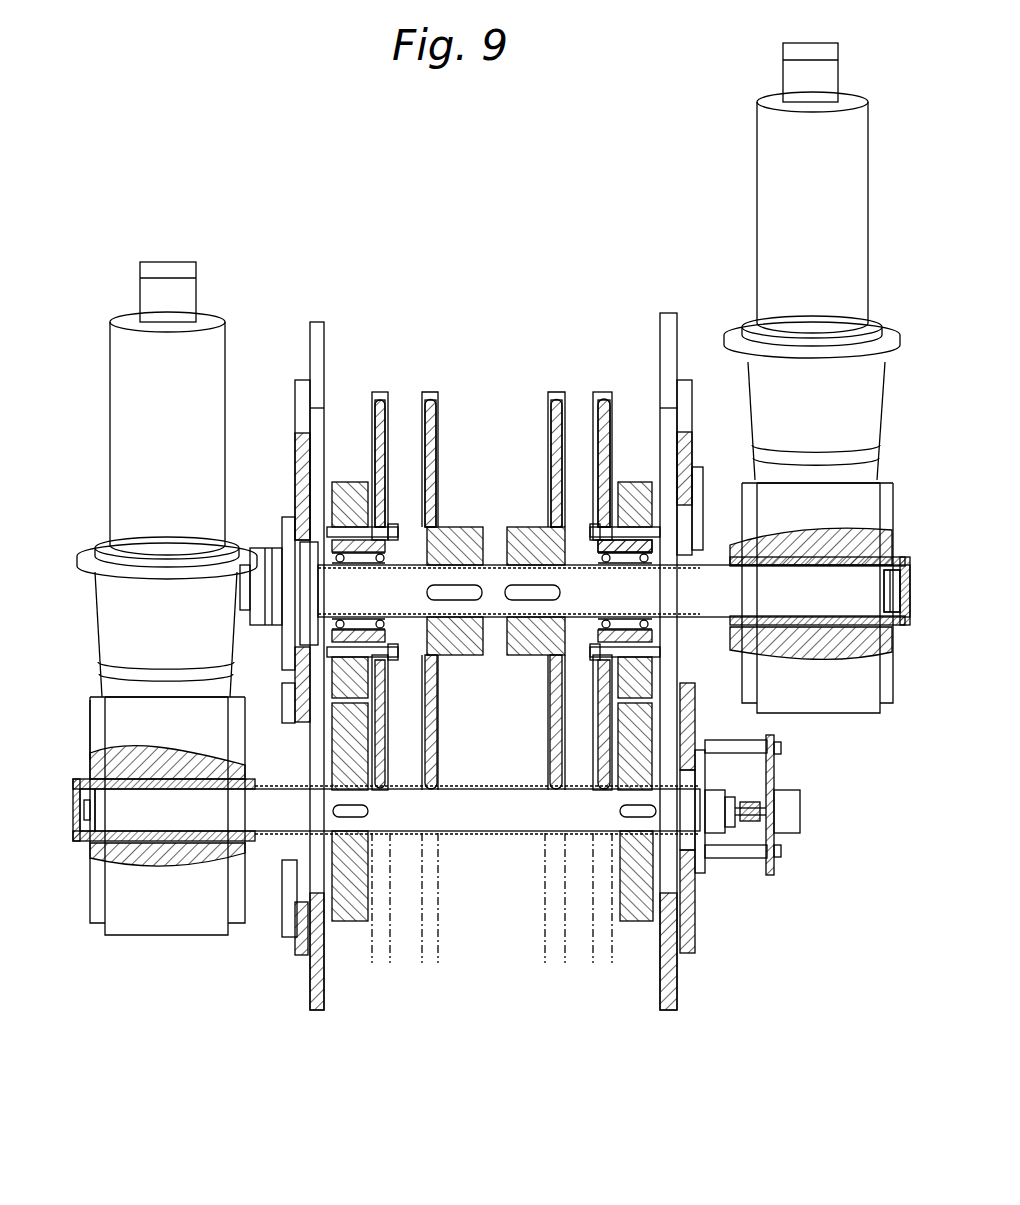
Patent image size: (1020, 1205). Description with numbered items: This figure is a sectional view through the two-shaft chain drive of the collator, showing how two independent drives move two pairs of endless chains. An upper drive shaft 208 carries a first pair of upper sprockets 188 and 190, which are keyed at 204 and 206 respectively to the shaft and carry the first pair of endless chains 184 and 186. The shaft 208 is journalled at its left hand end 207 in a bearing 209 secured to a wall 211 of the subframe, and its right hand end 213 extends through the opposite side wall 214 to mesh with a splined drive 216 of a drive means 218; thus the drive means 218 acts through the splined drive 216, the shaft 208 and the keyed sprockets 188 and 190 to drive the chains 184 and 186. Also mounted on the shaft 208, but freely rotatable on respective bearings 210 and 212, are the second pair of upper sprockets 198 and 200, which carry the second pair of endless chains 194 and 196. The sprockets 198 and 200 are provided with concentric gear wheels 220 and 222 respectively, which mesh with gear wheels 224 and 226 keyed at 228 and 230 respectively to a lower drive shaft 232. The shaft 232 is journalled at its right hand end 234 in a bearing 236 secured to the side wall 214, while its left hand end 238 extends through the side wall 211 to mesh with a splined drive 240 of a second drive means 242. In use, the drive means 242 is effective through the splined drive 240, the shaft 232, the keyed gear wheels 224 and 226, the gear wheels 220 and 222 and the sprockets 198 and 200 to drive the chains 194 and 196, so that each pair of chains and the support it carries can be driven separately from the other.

The endless chain 184 is at (430, 385).
The endless chain 186 is at (552, 390).
The upper sprocket 188 is at (434, 424).
The upper sprocket 190 is at (552, 424).
The endless chain 194 is at (388, 560).
The endless chain 196 is at (595, 560).
The upper sprocket 198 is at (380, 420).
The upper sprocket 200 is at (606, 422).
The key 204 is at (430, 592).
The key 206 is at (556, 593).
The left hand end of shaft 207 is at (268, 632).
The drive shaft 208 is at (760, 604).
The bearing 209 is at (291, 522).
The bearing 210 is at (328, 593).
The wall of subframe 211 is at (301, 386).
The bearing 212 is at (632, 566).
The right hand end of shaft 213 is at (905, 555).
The side wall of subframe 214 is at (690, 396).
The splined drive 216 is at (828, 660).
The drive means 218 is at (882, 270).
The gear wheel 220 is at (354, 490).
The gear wheel 222 is at (640, 490).
The gear wheel 224 is at (352, 920).
The gear wheel 226 is at (632, 878).
The key 228 is at (333, 811).
The key 230 is at (620, 811).
The drive shaft 232 is at (485, 795).
The right hand end of shaft 234 is at (714, 874).
The bearing 236 is at (705, 777).
The left hand end of shaft 238 is at (128, 817).
The splined drive 240 is at (80, 764).
The drive means 242 is at (80, 488).